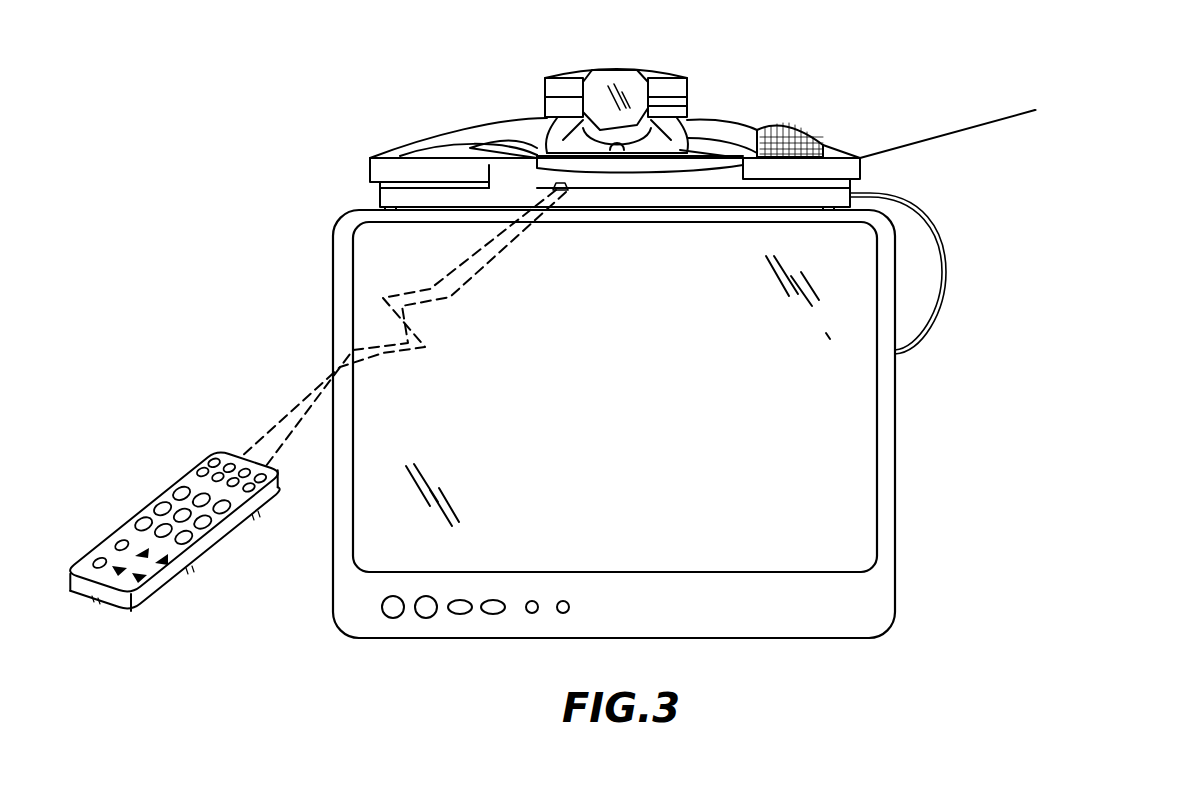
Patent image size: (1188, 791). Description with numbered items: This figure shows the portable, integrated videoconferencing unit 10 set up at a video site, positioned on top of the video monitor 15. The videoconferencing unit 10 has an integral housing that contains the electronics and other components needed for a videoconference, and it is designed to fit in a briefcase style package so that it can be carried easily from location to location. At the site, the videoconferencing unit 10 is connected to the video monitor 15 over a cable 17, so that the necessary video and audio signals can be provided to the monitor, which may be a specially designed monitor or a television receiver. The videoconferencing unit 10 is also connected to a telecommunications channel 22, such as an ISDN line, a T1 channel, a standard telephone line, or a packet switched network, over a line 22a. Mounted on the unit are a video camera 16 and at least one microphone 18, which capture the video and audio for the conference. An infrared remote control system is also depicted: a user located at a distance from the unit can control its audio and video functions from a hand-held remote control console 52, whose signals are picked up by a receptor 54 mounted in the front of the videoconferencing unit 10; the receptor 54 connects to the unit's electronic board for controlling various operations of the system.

The videoconferencing unit 10 is at (437, 105).
The video monitor 15 is at (897, 410).
The video camera 16 is at (660, 72).
The cable 17 is at (945, 276).
The microphone 18 is at (792, 127).
The telecommunications channel 22 is at (1102, 113).
The line 22a is at (912, 148).
The hand-held remote control console 52 is at (150, 492).
The receptor 54 is at (557, 193).